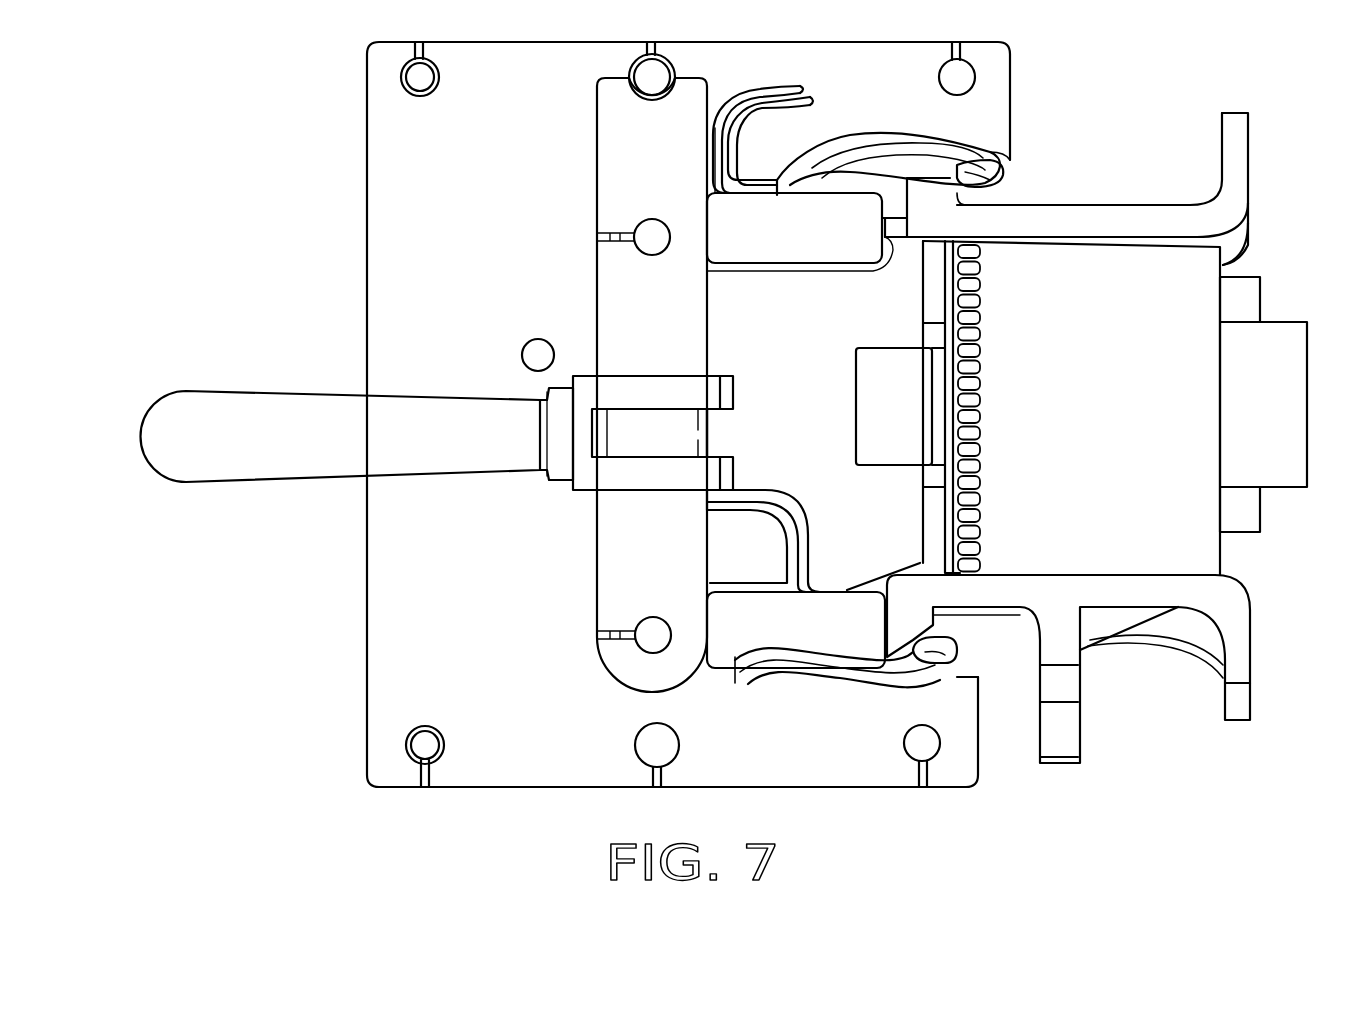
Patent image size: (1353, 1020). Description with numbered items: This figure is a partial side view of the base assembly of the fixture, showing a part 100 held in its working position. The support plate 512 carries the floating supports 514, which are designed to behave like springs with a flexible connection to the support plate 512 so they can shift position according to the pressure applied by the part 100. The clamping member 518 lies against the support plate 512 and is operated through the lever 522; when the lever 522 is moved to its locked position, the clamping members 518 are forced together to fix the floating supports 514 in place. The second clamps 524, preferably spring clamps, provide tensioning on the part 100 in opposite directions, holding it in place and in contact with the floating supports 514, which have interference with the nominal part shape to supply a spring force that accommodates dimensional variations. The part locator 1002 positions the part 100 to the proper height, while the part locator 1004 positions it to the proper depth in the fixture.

The support plate 512 is at (498, 244).
The clamping member 518 is at (676, 556).
The floating support 514 is at (815, 244).
The lever 522 is at (317, 442).
The second clamp 524 is at (1003, 178).
The part locator 1002 is at (913, 241).
The part locator 1004 is at (940, 417).
The part 100 is at (1093, 643).